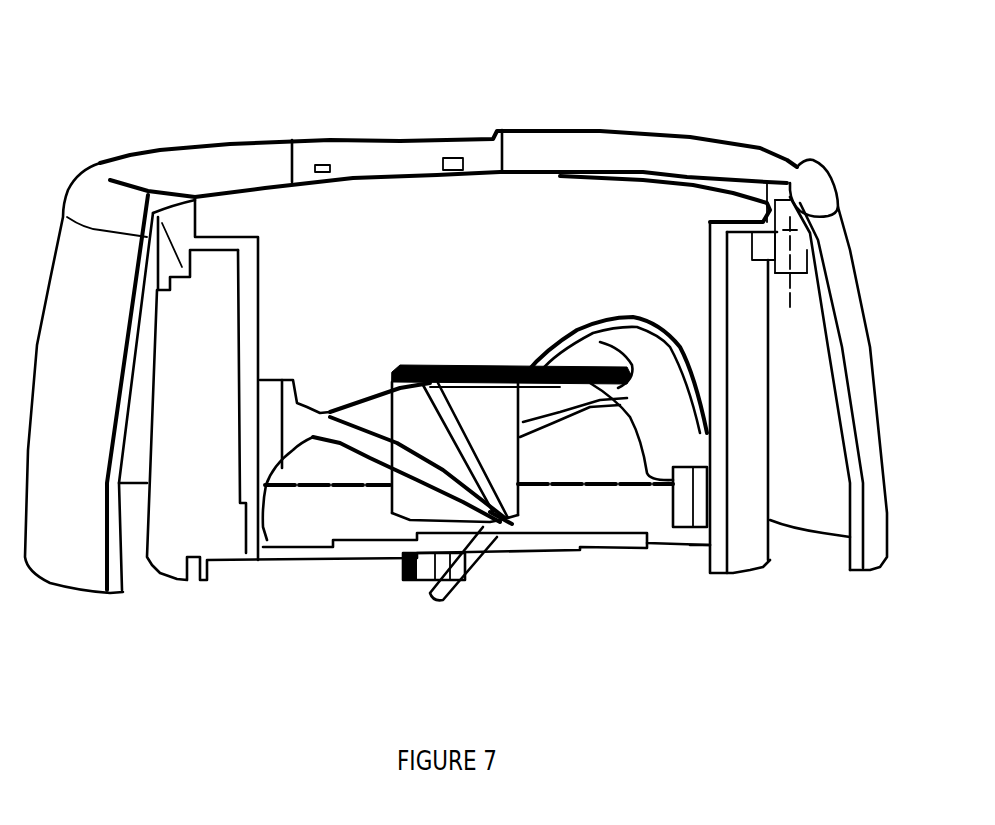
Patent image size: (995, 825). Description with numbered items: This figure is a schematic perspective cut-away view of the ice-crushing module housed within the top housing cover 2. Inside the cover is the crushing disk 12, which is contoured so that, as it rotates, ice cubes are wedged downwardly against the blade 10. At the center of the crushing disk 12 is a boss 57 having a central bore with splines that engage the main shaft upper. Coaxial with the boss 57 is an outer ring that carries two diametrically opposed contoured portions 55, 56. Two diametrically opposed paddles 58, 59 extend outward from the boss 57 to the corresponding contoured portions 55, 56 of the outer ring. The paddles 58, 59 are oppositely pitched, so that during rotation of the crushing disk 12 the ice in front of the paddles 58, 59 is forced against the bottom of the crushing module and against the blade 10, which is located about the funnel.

The top housing cover 2 is at (148, 195).
The blade 10 is at (467, 577).
The crushing disk 12 is at (377, 390).
The contoured portion 55 is at (270, 380).
The contoured portion 56 is at (640, 316).
The boss 57 is at (488, 412).
The paddle 58 is at (372, 440).
The paddle 59 is at (565, 408).